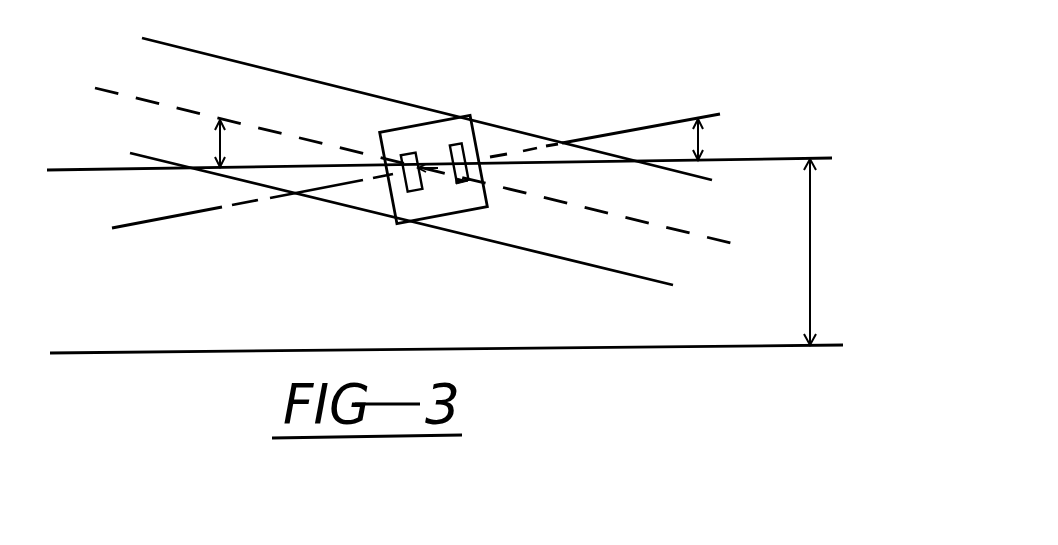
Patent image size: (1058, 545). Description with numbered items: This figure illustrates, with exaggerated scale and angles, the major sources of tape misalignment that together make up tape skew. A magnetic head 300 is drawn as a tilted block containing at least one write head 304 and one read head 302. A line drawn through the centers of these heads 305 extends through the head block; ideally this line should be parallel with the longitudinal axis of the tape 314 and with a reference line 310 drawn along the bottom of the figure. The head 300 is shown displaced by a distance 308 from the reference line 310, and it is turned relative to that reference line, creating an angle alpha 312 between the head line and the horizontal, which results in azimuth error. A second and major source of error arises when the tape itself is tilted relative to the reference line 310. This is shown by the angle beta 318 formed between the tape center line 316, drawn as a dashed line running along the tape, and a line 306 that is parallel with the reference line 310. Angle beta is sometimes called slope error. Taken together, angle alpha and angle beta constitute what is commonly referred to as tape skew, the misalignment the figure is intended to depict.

The magnetic head 300 is at (513, 98).
The read head 302 is at (477, 192).
The write head 304 is at (398, 222).
The line through the centers of the heads 305 is at (162, 222).
The line parallel with reference line 306 is at (600, 163).
The distance 308 is at (810, 282).
The reference line 310 is at (742, 349).
The angle alpha 312 is at (697, 138).
The tape 314 is at (287, 93).
The tape center line 316 is at (133, 106).
The angle beta 318 is at (218, 152).